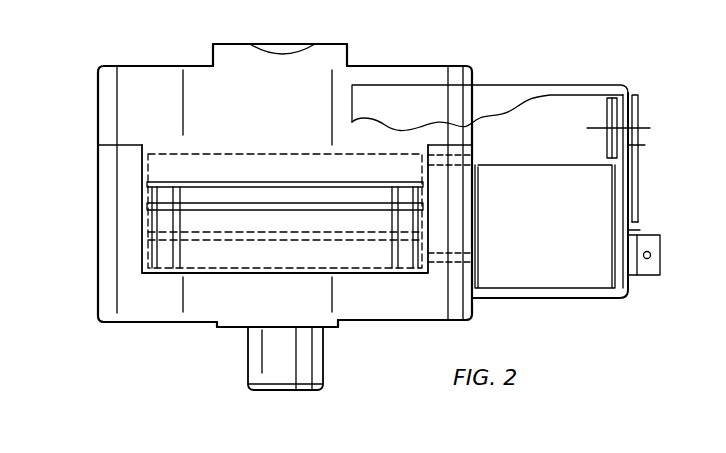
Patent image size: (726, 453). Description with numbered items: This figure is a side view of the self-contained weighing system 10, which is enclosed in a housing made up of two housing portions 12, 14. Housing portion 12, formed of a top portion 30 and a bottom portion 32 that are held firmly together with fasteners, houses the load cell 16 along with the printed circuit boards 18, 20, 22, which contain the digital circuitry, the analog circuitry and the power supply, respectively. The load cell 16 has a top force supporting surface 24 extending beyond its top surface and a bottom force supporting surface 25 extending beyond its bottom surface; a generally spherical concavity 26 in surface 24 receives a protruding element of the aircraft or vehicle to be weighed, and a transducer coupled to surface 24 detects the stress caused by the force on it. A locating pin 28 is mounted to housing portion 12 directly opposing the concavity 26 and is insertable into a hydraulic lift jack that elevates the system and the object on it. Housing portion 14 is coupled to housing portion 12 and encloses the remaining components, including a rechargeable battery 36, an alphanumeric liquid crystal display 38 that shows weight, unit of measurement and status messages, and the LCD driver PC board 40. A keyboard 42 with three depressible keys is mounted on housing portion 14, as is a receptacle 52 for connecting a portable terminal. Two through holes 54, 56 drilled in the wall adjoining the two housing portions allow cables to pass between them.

The self-contained weighing system 10 is at (72, 307).
The housing portion 12 is at (428, 66).
The housing portion 14 is at (508, 85).
The load cell 16 is at (245, 117).
The printed circuit board 18 is at (255, 179).
The printed circuit board 20 is at (333, 231).
The printed circuit board 22 is at (267, 266).
The top force supporting surface 24 is at (320, 44).
The bottom force supporting surface 25 is at (228, 327).
The concavity 26 is at (258, 44).
The locating pin 28 is at (324, 358).
The top portion 30 is at (100, 132).
The bottom portion 32 is at (100, 182).
The rechargeable battery 36 is at (525, 285).
The liquid crystal display 38 is at (640, 112).
The LCD driver PC board 40 is at (607, 140).
The keyboard 42 is at (638, 190).
The receptacle 52 is at (660, 272).
The through hole 54 is at (473, 160).
The through hole 56 is at (472, 257).